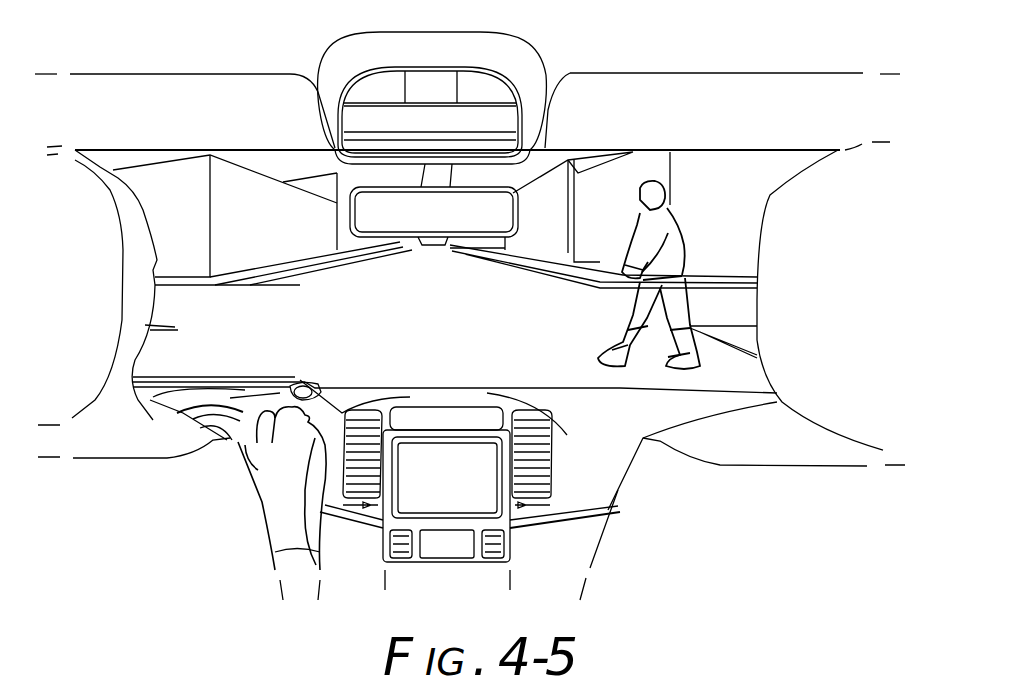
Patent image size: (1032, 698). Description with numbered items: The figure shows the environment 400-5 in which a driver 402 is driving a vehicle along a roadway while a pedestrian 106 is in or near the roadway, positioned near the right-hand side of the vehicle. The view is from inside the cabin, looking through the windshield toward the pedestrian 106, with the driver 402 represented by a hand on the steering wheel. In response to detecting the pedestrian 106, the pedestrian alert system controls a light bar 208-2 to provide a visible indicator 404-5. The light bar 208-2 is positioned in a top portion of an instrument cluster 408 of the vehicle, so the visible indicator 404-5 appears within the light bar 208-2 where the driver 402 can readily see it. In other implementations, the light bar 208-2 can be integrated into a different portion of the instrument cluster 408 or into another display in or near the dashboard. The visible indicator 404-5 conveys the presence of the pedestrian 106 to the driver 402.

The environment 400-5 is at (160, 38).
The driver 402 is at (98, 161).
The pedestrian 106 is at (658, 230).
The light bar 208-2 is at (265, 380).
The visible indicator 404-5 is at (302, 386).
The instrument cluster 408 is at (247, 438).